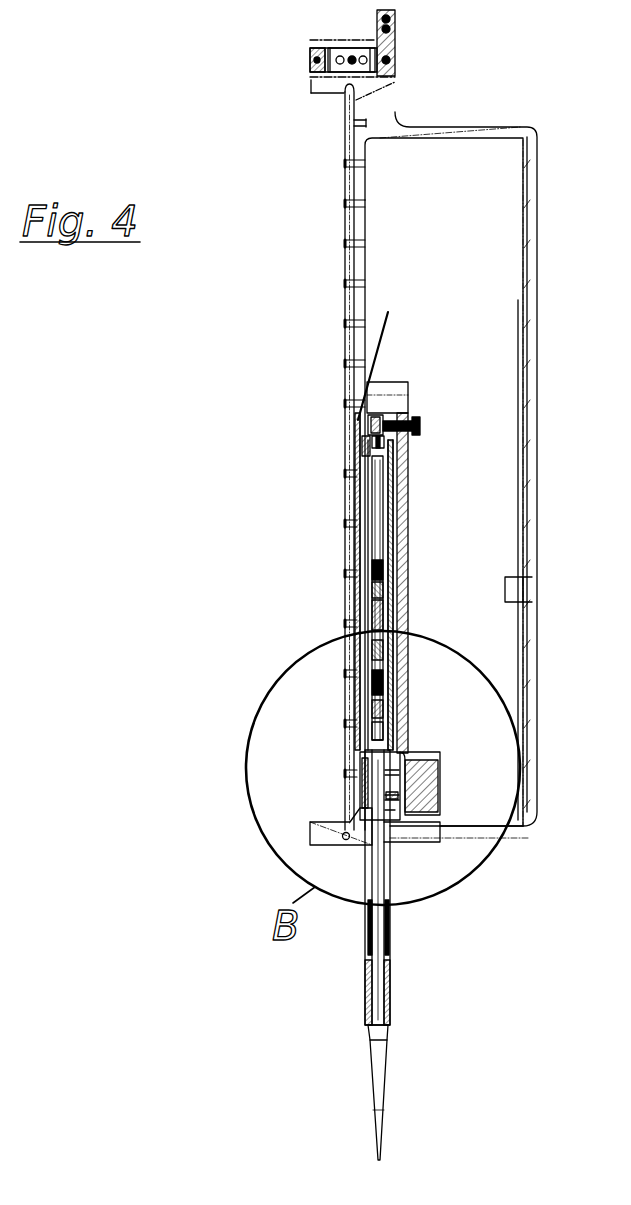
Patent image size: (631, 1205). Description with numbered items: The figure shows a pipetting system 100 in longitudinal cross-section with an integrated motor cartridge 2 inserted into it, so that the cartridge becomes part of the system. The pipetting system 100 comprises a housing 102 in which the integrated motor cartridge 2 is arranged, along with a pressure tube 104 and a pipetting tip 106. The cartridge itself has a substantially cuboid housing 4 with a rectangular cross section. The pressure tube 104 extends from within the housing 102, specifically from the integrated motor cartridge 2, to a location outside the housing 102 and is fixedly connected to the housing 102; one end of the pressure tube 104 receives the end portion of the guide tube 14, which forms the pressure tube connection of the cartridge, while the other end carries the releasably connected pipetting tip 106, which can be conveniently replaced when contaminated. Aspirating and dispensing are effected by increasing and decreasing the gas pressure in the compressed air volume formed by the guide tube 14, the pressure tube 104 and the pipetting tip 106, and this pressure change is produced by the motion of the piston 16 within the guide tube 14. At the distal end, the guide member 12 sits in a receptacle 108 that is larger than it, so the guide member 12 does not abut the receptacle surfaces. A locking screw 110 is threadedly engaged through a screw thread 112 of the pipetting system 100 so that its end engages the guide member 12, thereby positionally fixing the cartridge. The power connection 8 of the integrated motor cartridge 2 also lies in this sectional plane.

The pipetting system 100 is at (247, 462).
The housing 102 is at (530, 478).
The pressure tube 104 is at (380, 940).
The pipetting tip 106 is at (387, 1078).
The receptacle 108 is at (408, 385).
The locking screw 110 is at (403, 422).
The screw thread 112 is at (418, 428).
The integrated motor cartridge 2 is at (420, 508).
The housing 4 is at (393, 580).
The power connection 8 is at (385, 333).
The guide member 12 is at (370, 420).
The guide tube 14 is at (377, 522).
The piston 16 is at (388, 618).